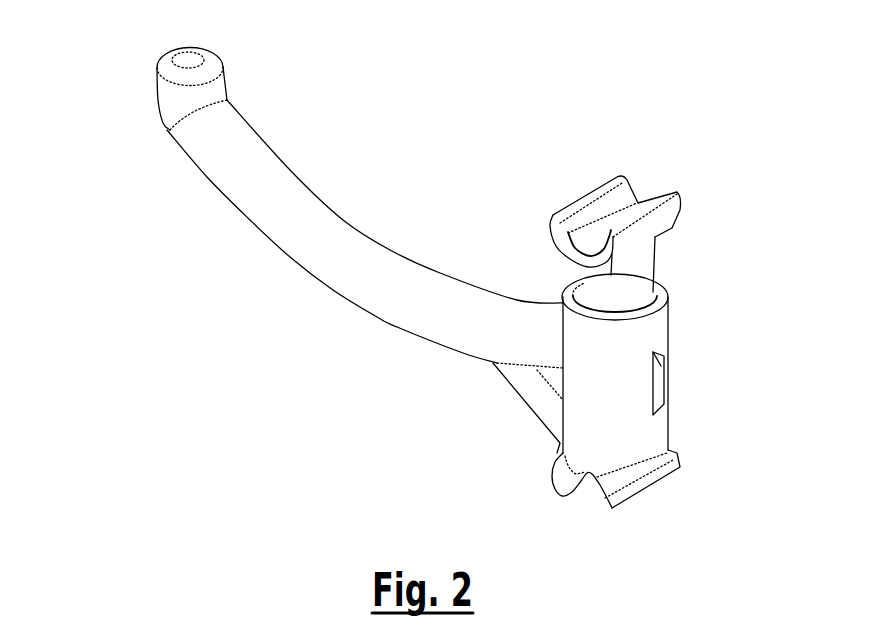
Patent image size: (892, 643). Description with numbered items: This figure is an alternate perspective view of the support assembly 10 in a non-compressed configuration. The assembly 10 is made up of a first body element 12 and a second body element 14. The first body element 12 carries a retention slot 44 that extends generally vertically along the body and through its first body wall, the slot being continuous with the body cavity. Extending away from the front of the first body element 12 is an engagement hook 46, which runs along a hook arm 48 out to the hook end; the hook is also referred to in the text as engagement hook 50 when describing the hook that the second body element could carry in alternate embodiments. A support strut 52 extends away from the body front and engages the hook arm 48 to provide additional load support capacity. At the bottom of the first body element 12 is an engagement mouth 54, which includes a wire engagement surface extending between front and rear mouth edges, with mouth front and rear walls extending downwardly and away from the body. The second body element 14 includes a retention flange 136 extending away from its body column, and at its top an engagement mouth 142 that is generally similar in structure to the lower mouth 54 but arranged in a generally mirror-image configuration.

The support assembly 10 is at (459, 60).
The first body element 12 is at (736, 440).
The second body element 14 is at (688, 239).
The retention slot 44 is at (655, 388).
The engagement hook 46 is at (398, 203).
The hook arm 48 is at (355, 282).
The engagement hook 50 is at (188, 60).
The support strut 52 is at (530, 393).
The engagement mouth 54 is at (580, 513).
The retention flange 136 is at (658, 354).
The engagement mouth 142 is at (648, 160).